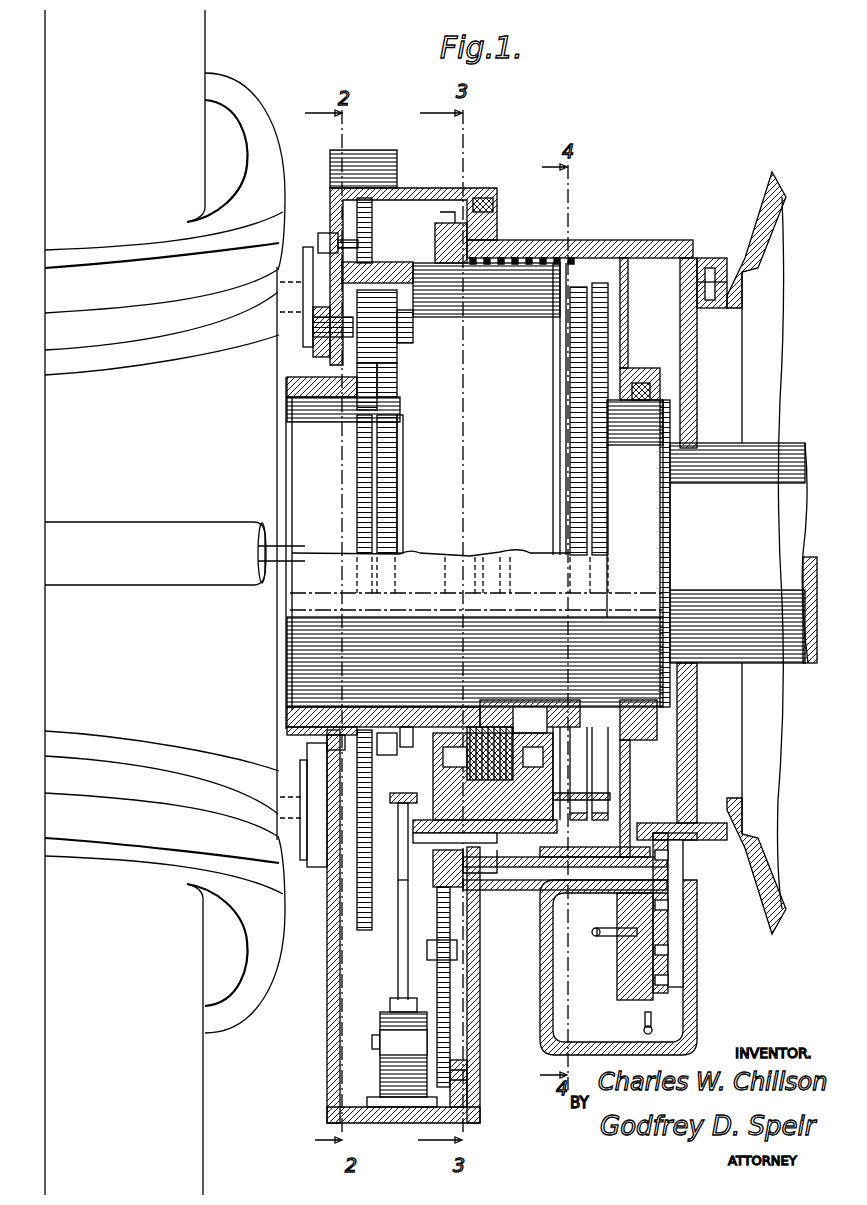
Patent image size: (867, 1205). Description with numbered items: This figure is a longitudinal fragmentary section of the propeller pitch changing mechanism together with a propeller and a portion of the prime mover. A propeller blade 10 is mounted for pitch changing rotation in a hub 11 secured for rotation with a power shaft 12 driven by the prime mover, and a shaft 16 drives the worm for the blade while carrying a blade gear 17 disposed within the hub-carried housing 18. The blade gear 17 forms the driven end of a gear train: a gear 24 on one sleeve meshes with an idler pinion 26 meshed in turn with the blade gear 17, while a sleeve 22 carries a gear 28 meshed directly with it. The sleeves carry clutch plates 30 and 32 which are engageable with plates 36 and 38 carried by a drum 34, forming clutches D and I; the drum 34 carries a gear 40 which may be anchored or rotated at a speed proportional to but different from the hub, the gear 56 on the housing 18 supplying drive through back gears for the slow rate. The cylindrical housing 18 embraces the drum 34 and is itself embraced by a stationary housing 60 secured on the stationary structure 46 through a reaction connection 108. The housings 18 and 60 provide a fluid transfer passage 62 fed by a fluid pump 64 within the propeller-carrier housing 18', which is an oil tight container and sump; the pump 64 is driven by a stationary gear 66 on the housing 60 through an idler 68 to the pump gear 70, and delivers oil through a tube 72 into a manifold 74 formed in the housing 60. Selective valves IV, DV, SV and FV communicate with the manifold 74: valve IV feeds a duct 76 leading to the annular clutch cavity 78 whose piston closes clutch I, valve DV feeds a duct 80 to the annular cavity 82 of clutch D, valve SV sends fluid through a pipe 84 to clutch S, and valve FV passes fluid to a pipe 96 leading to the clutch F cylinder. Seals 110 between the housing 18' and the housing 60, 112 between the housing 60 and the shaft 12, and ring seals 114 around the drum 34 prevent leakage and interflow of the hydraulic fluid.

The propeller blade 10 is at (195, 153).
The hub 11 is at (278, 462).
The power shaft 12 is at (552, 485).
The shaft 16 is at (290, 285).
The blade gear 17 is at (375, 228).
The hub-carried housing 18 is at (433, 680).
The propeller-carrier housing 18' is at (413, 257).
The sleeve 22 is at (406, 730).
The gear 24 is at (390, 507).
The idler pinion 26 is at (390, 350).
The gear 28 is at (358, 515).
The clutch plate 30 is at (475, 712).
The clutch plate 32 is at (508, 712).
The drum 34 is at (530, 720).
The clutch plate 36 is at (483, 712).
The clutch plate 38 is at (497, 712).
The gear 40 is at (600, 290).
The stationary portion 46 is at (745, 293).
The gear 56 is at (578, 290).
The stationary housing 60 is at (580, 241).
The fluid transfer passage 62 is at (400, 850).
The fluid pump 64 is at (402, 1052).
The stationary gear 66 is at (448, 218).
The idler 68 is at (455, 980).
The pump gear 70 is at (455, 1073).
The tube 72 is at (398, 976).
The manifold 74 is at (680, 884).
The duct 76 is at (637, 860).
The annular clutch cavity 78 is at (555, 775).
The duct 80 is at (572, 888).
The annular cavity 82 is at (440, 770).
The pipe 84 is at (597, 937).
The pipe 96 is at (643, 1028).
The reaction connection 108 is at (710, 268).
The seal 110 is at (490, 205).
The seal 112 is at (642, 378).
The ring seals 114 is at (506, 850).
The valve IV is at (680, 850).
The valve DV is at (680, 908).
The valve SV is at (680, 955).
The valve FV is at (680, 985).